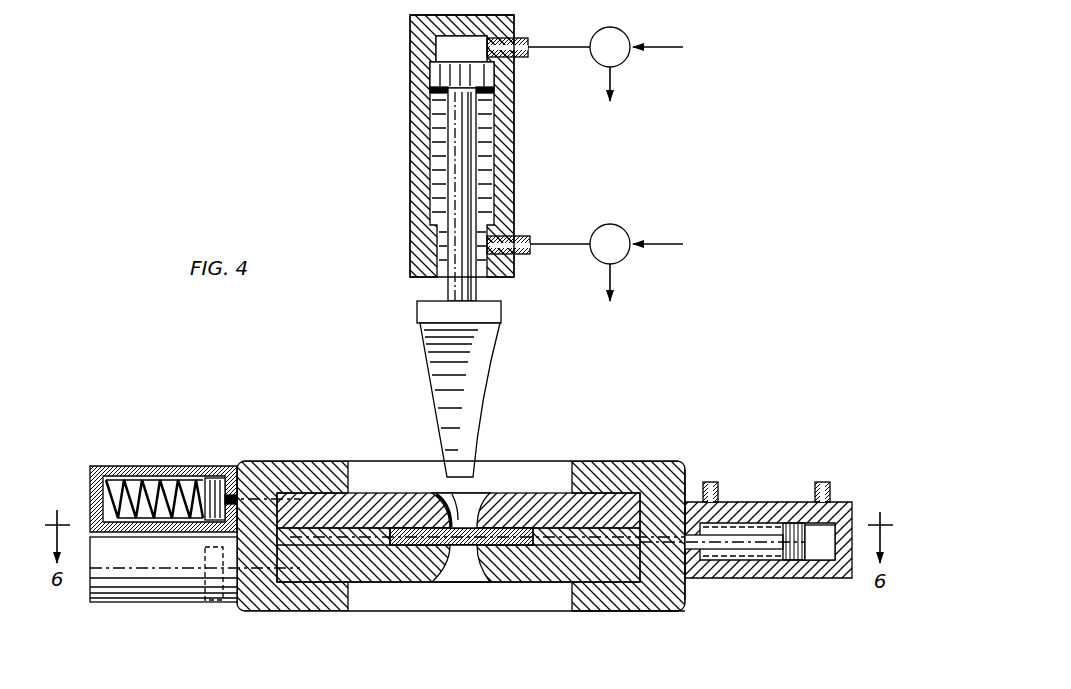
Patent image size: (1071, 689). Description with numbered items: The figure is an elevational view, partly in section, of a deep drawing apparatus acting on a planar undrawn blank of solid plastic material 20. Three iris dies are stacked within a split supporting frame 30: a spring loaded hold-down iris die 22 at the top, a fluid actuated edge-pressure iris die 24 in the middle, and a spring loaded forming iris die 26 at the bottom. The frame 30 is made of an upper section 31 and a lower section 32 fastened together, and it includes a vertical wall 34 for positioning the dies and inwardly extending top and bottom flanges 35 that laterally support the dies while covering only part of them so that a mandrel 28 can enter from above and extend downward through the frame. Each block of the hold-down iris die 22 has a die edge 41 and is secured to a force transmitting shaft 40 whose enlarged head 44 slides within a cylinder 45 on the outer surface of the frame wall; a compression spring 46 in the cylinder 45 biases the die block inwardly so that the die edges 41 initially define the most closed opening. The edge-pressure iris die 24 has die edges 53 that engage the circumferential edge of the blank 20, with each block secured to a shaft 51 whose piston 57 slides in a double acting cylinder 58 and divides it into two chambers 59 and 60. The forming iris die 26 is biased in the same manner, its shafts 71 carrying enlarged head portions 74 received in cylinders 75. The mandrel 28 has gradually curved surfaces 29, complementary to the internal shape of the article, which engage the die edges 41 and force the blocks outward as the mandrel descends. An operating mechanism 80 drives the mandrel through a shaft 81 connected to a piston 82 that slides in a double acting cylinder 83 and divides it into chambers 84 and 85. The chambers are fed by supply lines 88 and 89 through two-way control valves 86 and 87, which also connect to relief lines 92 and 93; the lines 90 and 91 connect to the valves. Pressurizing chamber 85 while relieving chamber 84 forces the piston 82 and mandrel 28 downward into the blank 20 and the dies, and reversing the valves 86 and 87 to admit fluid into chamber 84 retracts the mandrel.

The planar undrawn blank of solid plastic material 20 is at (461, 568).
The hold-down iris die 22 is at (507, 487).
The edge-pressure iris die 24 is at (550, 585).
The forming iris die 26 is at (500, 587).
The mandrel 28 is at (418, 326).
The curved surface of the mandrel 29 is at (440, 388).
The split supporting frame 30 is at (475, 526).
The upper section 31 is at (630, 462).
The lower section 32 is at (615, 614).
The vertical wall 34 is at (670, 580).
The top and bottom flanges 35 is at (562, 490).
The force transmitting shaft 40 is at (232, 466).
The die edge 41 is at (447, 497).
The enlarged head 44 is at (213, 478).
The cylinder 45 is at (100, 466).
The compression spring 46 is at (125, 477).
The force transmitting shaft 51 is at (733, 540).
The die edge 53 is at (397, 522).
The piston 57 is at (792, 548).
The double acting cylinder 58 is at (793, 490).
The chamber 59 is at (820, 552).
The chamber 60 is at (752, 520).
The shaft 71 is at (225, 601).
The enlarged head portion 74 is at (195, 583).
The cylinder 75 is at (117, 607).
The operating mechanism 80 is at (405, 137).
The shaft 81 is at (450, 290).
The piston 82 is at (445, 78).
The double acting cylinder 83 is at (514, 160).
The chamber 84 is at (440, 176).
The chamber 85 is at (445, 46).
The two-way control valve 86 is at (626, 228).
The two-way control valve 87 is at (625, 33).
The supply line 88 is at (553, 242).
The supply line 89 is at (556, 52).
The lower supply line 90 is at (666, 247).
The upper supply line 91 is at (668, 52).
The relief line 92 is at (616, 275).
The relief line 93 is at (615, 80).